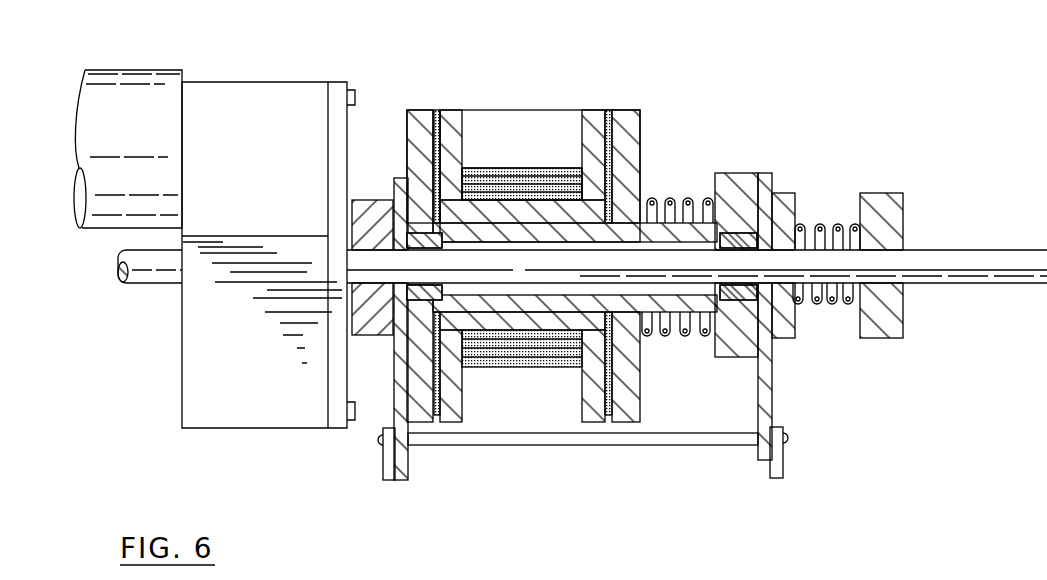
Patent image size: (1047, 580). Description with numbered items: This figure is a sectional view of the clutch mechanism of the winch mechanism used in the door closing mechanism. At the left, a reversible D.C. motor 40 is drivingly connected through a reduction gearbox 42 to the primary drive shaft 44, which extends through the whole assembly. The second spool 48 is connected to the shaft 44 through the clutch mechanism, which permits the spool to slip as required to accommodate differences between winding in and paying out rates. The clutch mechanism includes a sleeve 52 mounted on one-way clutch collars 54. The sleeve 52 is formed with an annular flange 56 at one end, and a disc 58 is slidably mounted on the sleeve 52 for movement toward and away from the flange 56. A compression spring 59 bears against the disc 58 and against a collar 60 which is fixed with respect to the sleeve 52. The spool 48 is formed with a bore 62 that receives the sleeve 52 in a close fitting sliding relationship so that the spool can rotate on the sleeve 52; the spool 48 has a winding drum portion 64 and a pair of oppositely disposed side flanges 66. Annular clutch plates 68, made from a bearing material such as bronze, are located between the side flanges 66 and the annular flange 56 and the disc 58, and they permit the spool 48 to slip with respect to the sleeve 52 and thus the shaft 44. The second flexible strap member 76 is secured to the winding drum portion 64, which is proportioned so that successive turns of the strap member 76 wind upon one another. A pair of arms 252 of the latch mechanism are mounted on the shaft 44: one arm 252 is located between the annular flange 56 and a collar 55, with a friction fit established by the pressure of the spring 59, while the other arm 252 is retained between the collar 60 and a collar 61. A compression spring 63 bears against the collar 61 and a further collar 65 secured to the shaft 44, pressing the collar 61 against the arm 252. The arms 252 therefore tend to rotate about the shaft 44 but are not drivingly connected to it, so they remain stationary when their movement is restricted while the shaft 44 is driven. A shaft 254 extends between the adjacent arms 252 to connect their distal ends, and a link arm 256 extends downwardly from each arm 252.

The reversible D.C. motor 40 is at (133, 92).
The reduction gearbox 42 is at (250, 90).
The primary drive shaft 44 is at (945, 250).
The second spool 48 is at (599, 107).
The sleeve 52 is at (680, 225).
The one-way clutch collars 54 is at (420, 234).
The collar 55 is at (366, 335).
The annular flange 56 is at (416, 112).
The disc 58 is at (630, 125).
The compression spring 59 is at (668, 197).
The collar 60 is at (735, 173).
The collar 61 is at (780, 197).
The bore 62 is at (518, 218).
The compression spring 63 is at (822, 226).
The winding drum portion 64 is at (522, 195).
The collar 65 is at (878, 193).
The side flanges 66 is at (453, 110).
The annular clutch plates 68 is at (437, 110).
The second flexible strap member 76 is at (514, 367).
The arms 252 is at (410, 450).
The shaft 254 is at (526, 445).
The link arm 256 is at (385, 468).